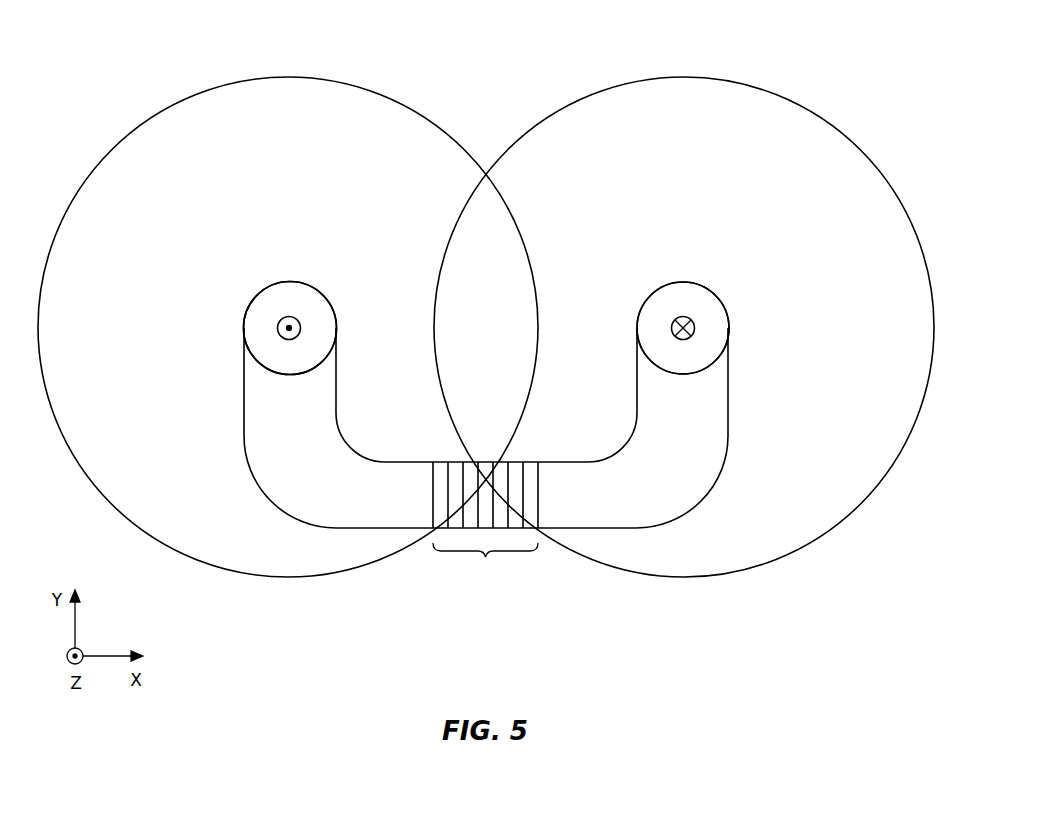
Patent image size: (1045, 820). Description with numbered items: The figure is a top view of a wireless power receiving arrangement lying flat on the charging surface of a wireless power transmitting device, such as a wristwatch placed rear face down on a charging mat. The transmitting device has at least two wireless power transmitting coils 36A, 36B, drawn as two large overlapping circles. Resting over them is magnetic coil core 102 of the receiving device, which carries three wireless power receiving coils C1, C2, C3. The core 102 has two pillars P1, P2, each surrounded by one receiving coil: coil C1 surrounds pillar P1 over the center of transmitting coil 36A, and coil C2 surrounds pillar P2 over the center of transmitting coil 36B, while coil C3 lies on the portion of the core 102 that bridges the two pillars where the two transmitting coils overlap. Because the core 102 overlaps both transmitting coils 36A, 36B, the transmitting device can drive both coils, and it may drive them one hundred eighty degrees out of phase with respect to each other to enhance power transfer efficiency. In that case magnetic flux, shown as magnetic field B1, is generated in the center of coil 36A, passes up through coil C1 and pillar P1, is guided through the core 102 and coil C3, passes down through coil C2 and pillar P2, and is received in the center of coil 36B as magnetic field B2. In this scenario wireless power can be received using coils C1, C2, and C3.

The wireless power transmitting coil 36A is at (292, 77).
The wireless power transmitting coil 36B is at (685, 77).
The magnetic coil core 102 is at (327, 505).
The wireless power receiving coil C1 is at (278, 283).
The wireless power receiving coil C2 is at (681, 283).
The wireless power receiving coil C3 is at (485, 523).
The pillar P1 is at (312, 308).
The pillar P2 is at (715, 313).
The magnetic field B1 is at (289, 340).
The magnetic field B2 is at (683, 317).